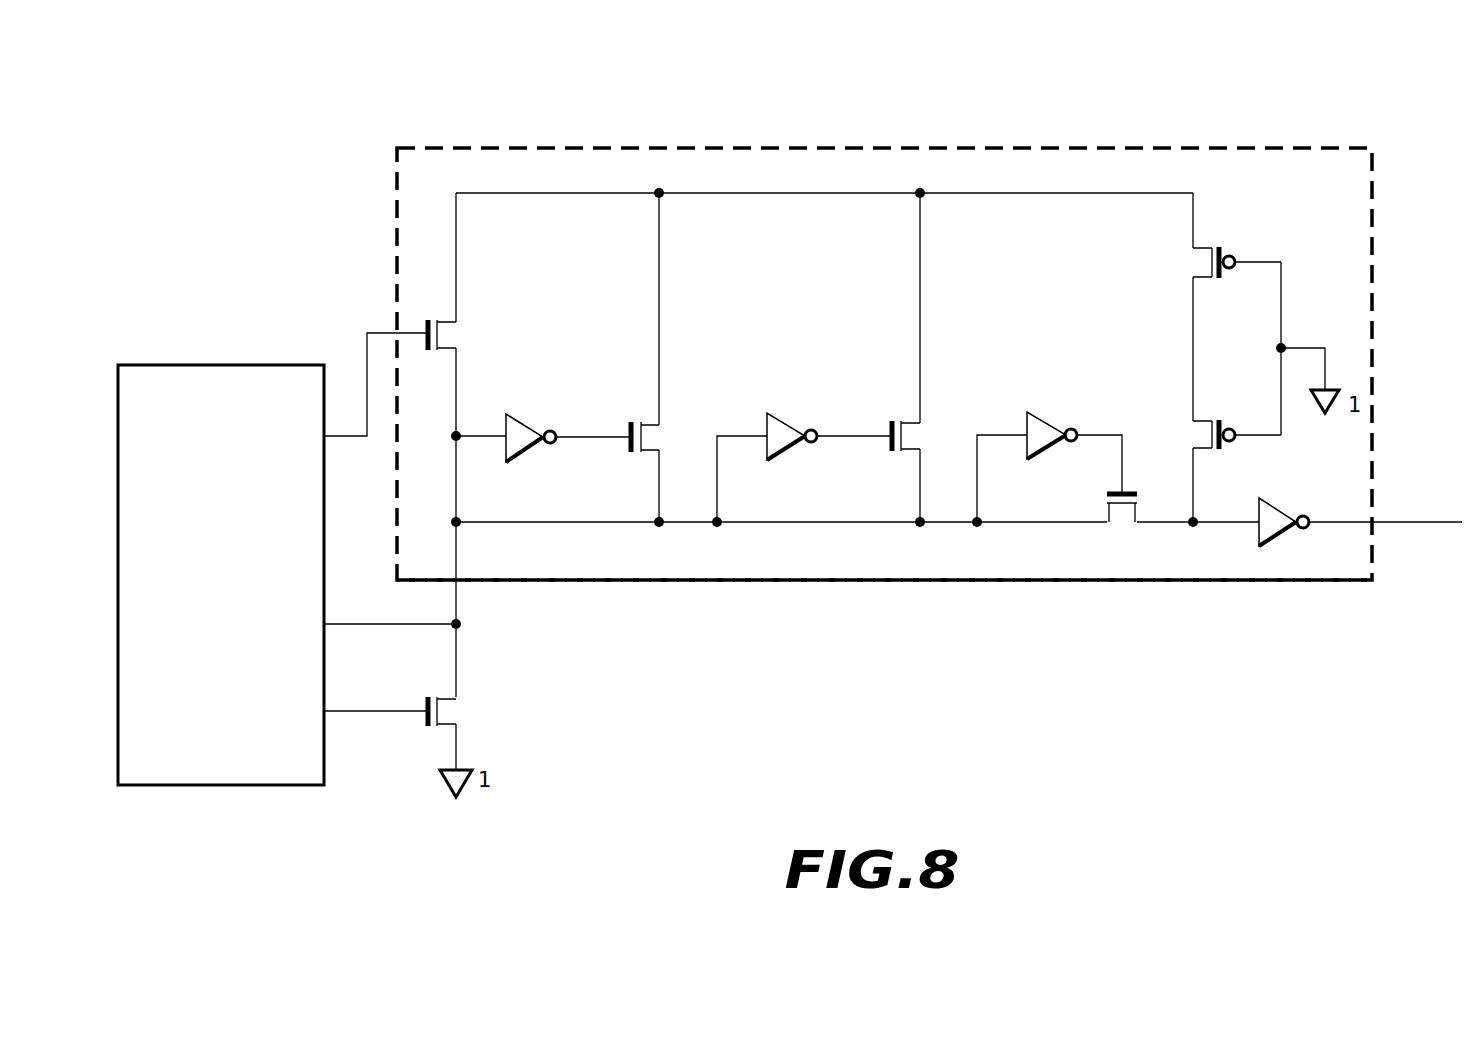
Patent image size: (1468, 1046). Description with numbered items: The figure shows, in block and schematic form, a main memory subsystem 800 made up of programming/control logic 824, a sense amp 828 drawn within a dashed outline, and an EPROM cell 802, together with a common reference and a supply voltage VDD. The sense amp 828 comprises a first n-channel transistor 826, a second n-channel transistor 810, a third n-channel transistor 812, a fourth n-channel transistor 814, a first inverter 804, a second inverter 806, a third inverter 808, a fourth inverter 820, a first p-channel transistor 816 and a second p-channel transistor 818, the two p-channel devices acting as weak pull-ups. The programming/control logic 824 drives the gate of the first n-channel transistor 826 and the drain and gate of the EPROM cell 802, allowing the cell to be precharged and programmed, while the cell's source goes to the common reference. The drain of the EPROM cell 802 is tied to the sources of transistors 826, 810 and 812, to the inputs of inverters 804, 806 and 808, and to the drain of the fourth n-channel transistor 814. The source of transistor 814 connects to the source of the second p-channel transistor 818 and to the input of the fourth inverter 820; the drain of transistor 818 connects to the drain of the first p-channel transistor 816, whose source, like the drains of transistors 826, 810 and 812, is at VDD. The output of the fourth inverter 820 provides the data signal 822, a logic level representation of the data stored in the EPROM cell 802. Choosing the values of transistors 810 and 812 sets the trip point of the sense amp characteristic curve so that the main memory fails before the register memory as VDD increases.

The main memory subsystem 800 is at (1214, 90).
The EPROM cell 802 is at (425, 717).
The first inverter 804 is at (527, 452).
The second inverter 806 is at (785, 456).
The third inverter 808 is at (1045, 413).
The second n-channel transistor 810 is at (634, 420).
The third n-channel transistor 812 is at (894, 420).
The fourth n-channel transistor 814 is at (1112, 491).
The first p-channel transistor 816 is at (1220, 247).
The second p-channel transistor 818 is at (1218, 449).
The fourth inverter 820 is at (1282, 502).
The data signal 822 is at (1412, 518).
The programming/control logic 824 is at (258, 655).
The first n-channel transistor 826 is at (428, 353).
The sense amp 828 is at (1187, 584).